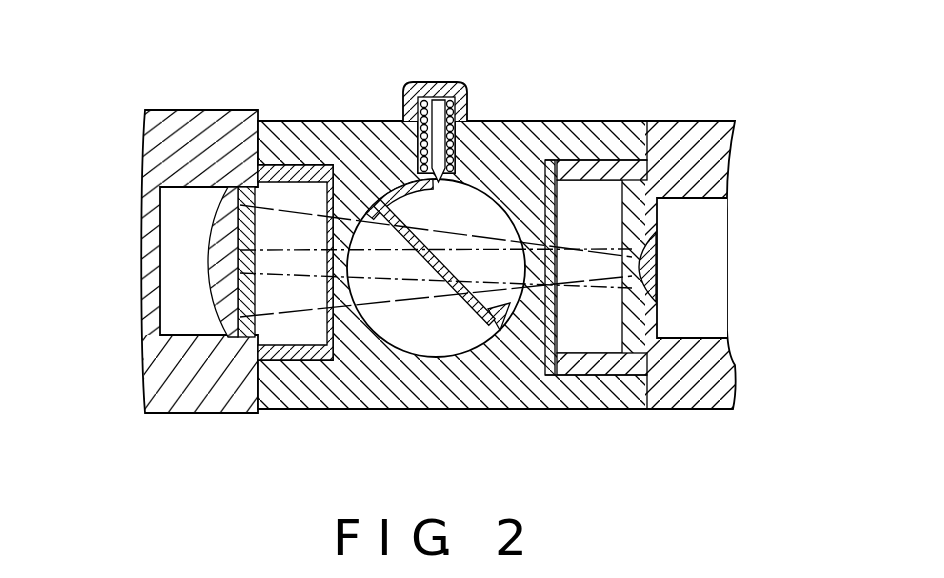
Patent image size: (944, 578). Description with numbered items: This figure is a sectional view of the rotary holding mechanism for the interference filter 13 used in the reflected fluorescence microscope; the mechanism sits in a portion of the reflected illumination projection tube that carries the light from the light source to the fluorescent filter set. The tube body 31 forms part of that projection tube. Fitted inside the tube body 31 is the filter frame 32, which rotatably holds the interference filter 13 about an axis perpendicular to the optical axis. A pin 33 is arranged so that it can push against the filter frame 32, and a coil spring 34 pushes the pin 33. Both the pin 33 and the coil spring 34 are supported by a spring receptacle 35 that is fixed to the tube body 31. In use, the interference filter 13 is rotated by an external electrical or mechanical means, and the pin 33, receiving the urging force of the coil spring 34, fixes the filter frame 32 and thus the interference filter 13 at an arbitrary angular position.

The interference filter 13 is at (470, 298).
The tube body 31 is at (585, 130).
The filter frame 32 is at (487, 337).
The pin 33 is at (407, 170).
The coil spring 34 is at (412, 84).
The spring receptacle 35 is at (462, 84).